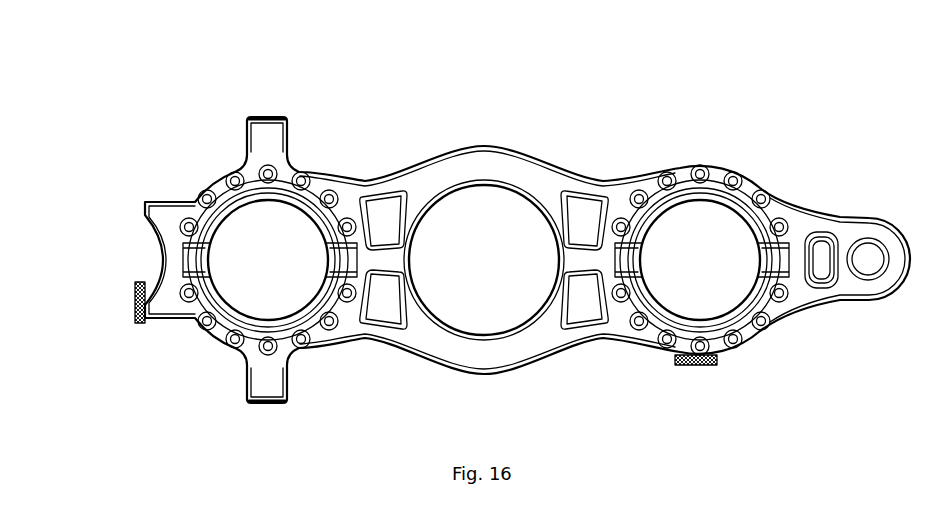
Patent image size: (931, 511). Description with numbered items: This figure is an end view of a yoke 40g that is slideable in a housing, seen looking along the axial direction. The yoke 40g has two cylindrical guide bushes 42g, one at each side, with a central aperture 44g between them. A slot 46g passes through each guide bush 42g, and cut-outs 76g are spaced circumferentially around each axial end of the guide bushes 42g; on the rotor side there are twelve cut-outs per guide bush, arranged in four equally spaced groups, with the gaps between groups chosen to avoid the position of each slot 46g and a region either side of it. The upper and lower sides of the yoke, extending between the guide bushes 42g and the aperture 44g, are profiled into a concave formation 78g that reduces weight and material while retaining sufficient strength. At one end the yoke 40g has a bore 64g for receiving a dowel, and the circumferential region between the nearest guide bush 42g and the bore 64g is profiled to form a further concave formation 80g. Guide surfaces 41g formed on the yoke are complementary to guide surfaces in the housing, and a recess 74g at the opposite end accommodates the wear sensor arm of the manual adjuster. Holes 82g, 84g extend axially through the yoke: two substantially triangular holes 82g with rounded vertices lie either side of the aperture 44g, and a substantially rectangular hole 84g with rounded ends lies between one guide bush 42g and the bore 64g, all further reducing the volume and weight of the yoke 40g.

The yoke 40g is at (750, 101).
The guide surface 41g is at (264, 117).
The cylindrical guide bush 42g is at (277, 274).
The aperture 44g is at (497, 274).
The slot 46g is at (185, 255).
The bore 64g is at (862, 266).
The recess 74g is at (146, 256).
The cut-outs 76g is at (191, 258).
The concave formation 78g is at (356, 162).
The concave formation 80g is at (810, 188).
The holes 82g is at (382, 222).
The hole 84g is at (800, 287).